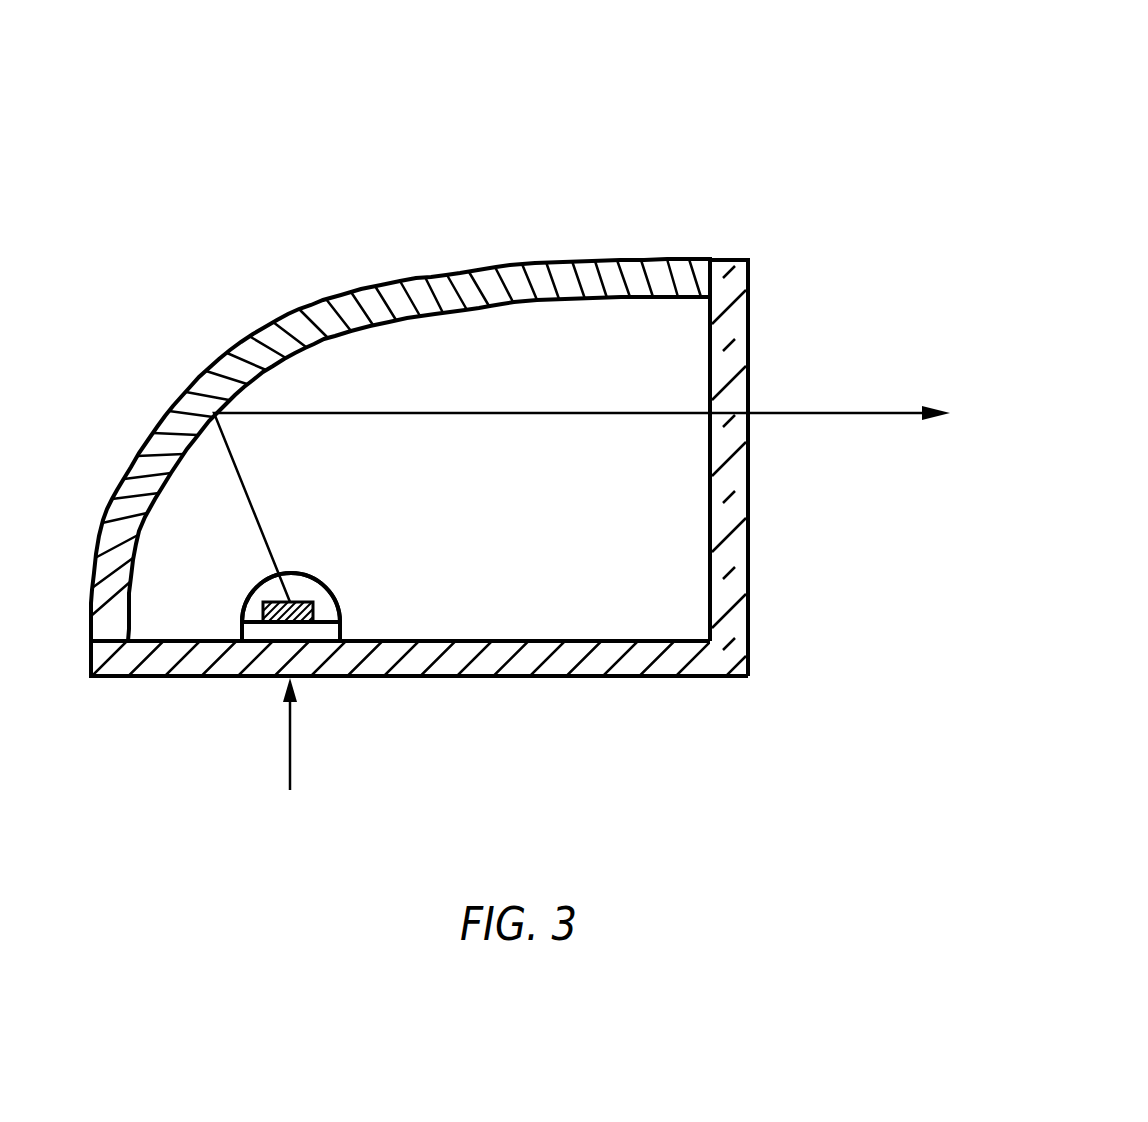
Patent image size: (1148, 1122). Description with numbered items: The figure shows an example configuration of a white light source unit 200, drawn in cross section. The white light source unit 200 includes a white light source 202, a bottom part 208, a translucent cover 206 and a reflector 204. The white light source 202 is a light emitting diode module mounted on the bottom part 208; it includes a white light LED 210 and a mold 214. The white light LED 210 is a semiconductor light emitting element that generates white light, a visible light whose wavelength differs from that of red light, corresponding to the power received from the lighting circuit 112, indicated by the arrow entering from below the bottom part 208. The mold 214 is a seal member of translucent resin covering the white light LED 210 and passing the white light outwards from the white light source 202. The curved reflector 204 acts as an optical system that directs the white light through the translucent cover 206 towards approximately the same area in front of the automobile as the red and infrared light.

The white light source unit 200 is at (860, 65).
The white light source 202 is at (368, 588).
The reflector 204 is at (510, 264).
The translucent cover 206 is at (748, 566).
The bottom part 208 is at (545, 677).
The white light LED 210 is at (312, 600).
The mold 214 is at (246, 592).
The lighting circuit 112 is at (288, 755).